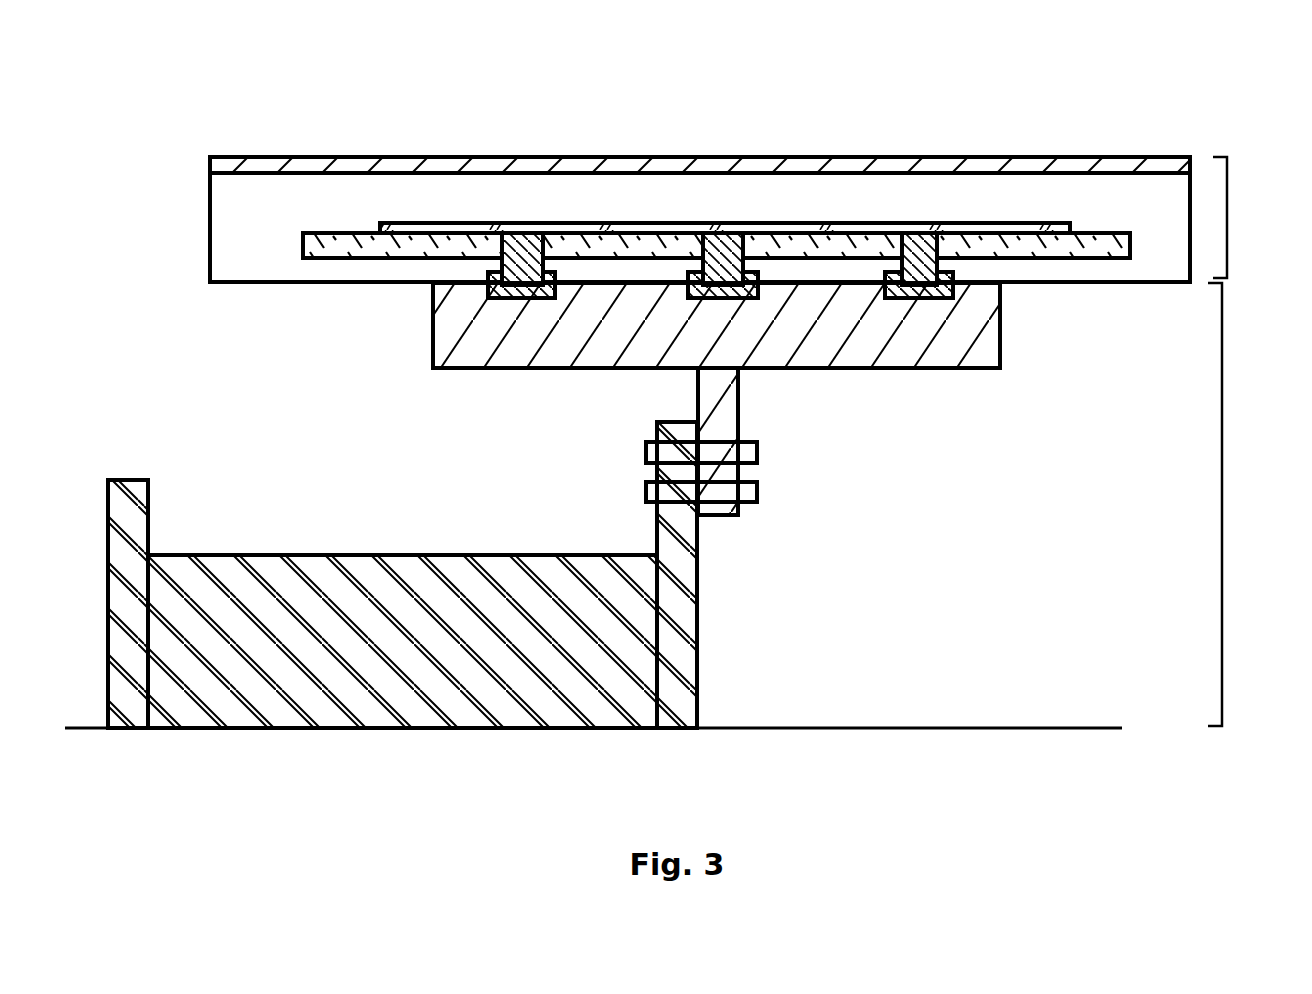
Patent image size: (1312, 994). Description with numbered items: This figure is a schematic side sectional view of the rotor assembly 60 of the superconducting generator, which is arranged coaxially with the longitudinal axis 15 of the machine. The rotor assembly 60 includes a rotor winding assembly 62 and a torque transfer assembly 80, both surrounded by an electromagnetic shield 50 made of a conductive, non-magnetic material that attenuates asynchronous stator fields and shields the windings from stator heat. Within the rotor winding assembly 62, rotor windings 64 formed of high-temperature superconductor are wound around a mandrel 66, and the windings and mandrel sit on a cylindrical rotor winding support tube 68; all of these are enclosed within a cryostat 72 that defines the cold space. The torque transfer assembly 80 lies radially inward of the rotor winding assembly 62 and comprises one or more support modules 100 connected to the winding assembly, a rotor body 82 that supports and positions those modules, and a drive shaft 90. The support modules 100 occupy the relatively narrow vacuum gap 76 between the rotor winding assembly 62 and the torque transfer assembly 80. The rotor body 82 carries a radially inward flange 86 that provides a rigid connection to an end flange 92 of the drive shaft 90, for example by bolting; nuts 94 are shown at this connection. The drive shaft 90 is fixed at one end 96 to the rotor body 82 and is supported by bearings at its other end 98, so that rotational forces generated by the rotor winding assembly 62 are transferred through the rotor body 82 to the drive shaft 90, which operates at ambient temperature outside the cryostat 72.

The rotor assembly 60 is at (688, 406).
The rotor winding assembly 62 is at (704, 210).
The cryostat 72 is at (647, 215).
The electromagnetic shield 50 is at (507, 167).
The rotor winding support tube 68 is at (327, 236).
The rotor windings 64 is at (418, 230).
The mandrel 66 is at (833, 223).
The support module 100 is at (505, 242).
The vacuum gap 76 is at (452, 267).
The torque transfer assembly 80 is at (710, 547).
The rotor body 82 is at (983, 323).
The flange 86 is at (727, 423).
The nut 94 is at (757, 453).
The one end 96 is at (632, 552).
The other end 98 is at (167, 553).
The drive shaft 90 is at (427, 715).
The end flange 92 is at (680, 617).
The longitudinal axis 15 is at (969, 726).